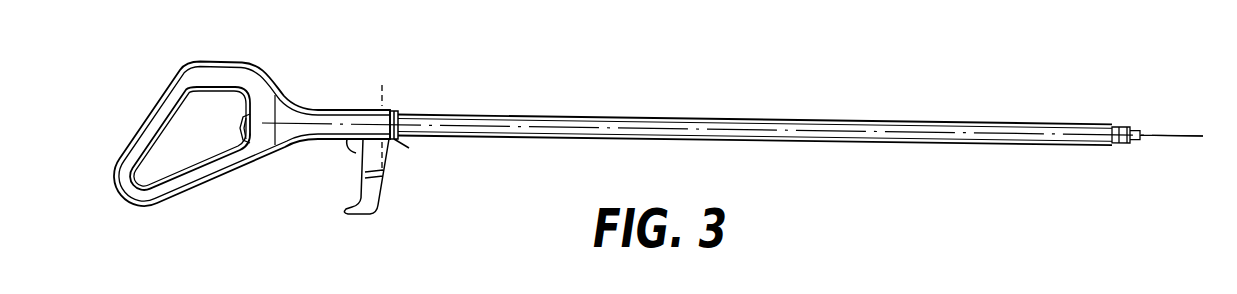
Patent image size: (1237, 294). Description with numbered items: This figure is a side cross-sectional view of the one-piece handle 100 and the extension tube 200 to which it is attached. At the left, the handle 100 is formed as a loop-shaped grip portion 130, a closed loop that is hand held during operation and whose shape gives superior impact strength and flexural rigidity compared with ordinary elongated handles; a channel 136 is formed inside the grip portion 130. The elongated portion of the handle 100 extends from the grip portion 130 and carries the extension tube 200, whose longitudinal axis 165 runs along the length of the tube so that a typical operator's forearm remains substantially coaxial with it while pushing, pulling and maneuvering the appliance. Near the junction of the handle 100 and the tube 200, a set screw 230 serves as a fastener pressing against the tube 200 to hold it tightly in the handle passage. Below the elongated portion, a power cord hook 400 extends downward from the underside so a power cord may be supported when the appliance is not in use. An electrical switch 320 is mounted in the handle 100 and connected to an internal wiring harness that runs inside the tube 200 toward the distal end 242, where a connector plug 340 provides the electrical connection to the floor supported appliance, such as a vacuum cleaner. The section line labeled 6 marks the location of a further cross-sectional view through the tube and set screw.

The handle 100 is at (259, 54).
The grip portion 130 is at (114, 182).
The channel 136 is at (181, 84).
The switch 320 is at (236, 141).
The longitudinal axis 165 is at (607, 127).
The extension tube 200 is at (794, 120).
The distal end 242 is at (1076, 160).
The connector plug 340 is at (1122, 126).
The set screw 230 is at (413, 138).
The power cord hook 400 is at (379, 194).
The section line 6- 6 is at (382, 85).